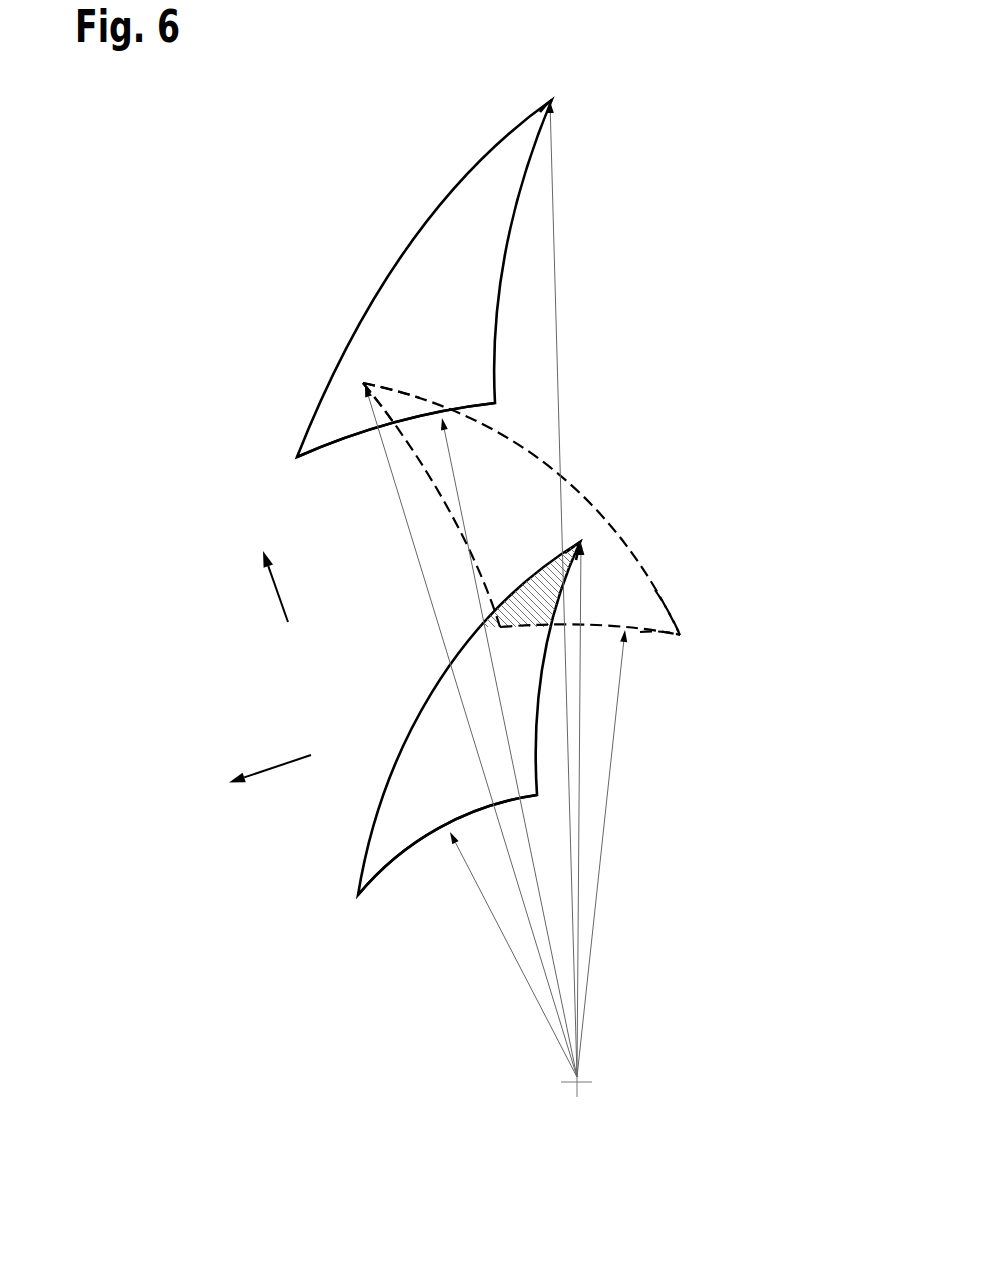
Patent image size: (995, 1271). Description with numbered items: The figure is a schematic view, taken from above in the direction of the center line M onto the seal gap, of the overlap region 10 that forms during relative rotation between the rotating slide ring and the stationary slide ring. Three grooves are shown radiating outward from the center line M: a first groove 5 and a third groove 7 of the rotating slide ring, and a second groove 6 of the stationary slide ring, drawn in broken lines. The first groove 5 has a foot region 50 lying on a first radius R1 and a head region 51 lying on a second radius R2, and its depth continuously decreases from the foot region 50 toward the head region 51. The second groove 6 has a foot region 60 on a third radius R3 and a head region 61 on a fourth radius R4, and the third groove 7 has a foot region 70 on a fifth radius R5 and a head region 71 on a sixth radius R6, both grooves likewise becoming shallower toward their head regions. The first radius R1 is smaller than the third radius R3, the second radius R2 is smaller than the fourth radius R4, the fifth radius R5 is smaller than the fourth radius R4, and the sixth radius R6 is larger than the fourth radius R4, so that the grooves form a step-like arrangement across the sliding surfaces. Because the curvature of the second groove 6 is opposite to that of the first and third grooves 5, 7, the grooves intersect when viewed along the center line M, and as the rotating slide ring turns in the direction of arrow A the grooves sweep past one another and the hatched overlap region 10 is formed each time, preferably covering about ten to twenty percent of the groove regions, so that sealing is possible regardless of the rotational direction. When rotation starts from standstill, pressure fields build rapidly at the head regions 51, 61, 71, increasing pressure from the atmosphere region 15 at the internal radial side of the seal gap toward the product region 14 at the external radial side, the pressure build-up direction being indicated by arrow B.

The first groove 5 is at (440, 712).
The second groove 6 is at (515, 467).
The third groove 7 is at (435, 263).
The overlap region 10 is at (543, 580).
The product region 14 is at (490, 75).
The atmosphere region 15 is at (476, 1057).
The foot region 50 is at (420, 843).
The head region 51 is at (607, 517).
The foot region 60 is at (641, 628).
The head region 61 is at (363, 382).
The foot region 70 is at (354, 433).
The head region 71 is at (552, 99).
The first radius R1 is at (515, 962).
The second radius R2 is at (579, 883).
The third radius R3 is at (603, 825).
The fourth radius R4 is at (398, 497).
The fifth radius R5 is at (472, 568).
The sixth radius R6 is at (554, 250).
The center line M is at (585, 1072).
The arrow A is at (262, 768).
The arrow B is at (273, 591).